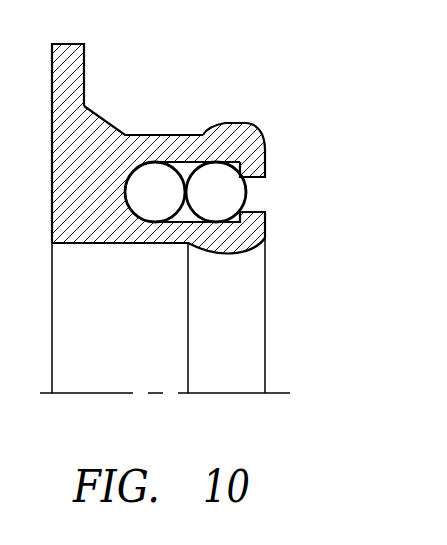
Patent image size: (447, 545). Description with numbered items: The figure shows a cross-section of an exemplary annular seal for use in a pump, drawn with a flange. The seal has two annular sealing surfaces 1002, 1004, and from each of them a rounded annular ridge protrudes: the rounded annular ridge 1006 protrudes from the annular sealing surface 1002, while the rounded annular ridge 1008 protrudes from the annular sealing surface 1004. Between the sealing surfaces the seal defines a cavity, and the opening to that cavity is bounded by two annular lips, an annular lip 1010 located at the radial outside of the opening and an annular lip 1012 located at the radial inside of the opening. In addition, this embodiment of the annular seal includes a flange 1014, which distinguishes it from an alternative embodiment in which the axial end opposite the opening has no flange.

The annular sealing surface 1002 is at (138, 243).
The annular sealing surface 1004 is at (147, 135).
The rounded annular ridge 1006 is at (240, 255).
The rounded annular ridge 1008 is at (244, 122).
The annular lip 1010 is at (257, 182).
The annular lip 1012 is at (258, 207).
The flange 1014 is at (87, 62).